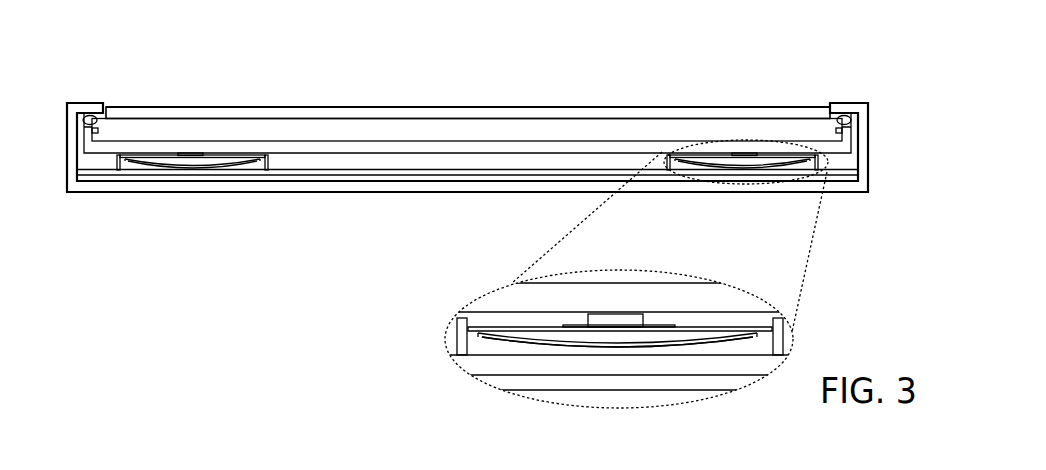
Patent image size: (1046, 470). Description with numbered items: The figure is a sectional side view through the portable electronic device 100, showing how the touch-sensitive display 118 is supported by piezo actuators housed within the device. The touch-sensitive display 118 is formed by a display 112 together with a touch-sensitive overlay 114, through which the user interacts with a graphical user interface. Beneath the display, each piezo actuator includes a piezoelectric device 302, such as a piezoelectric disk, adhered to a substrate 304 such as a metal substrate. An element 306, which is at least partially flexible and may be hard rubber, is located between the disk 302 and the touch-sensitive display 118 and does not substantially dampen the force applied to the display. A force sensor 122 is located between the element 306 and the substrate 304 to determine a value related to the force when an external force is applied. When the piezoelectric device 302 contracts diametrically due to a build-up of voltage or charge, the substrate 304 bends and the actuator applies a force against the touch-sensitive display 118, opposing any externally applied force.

The portable electronic device 100 is at (690, 68).
The display 112 is at (370, 120).
The touch-sensitive overlay 114 is at (443, 108).
The touch-sensitive display 118 is at (187, 107).
The force sensor 122 is at (678, 328).
The piezoelectric device 302 is at (640, 345).
The substrate 304 is at (485, 328).
The element 306 is at (587, 320).